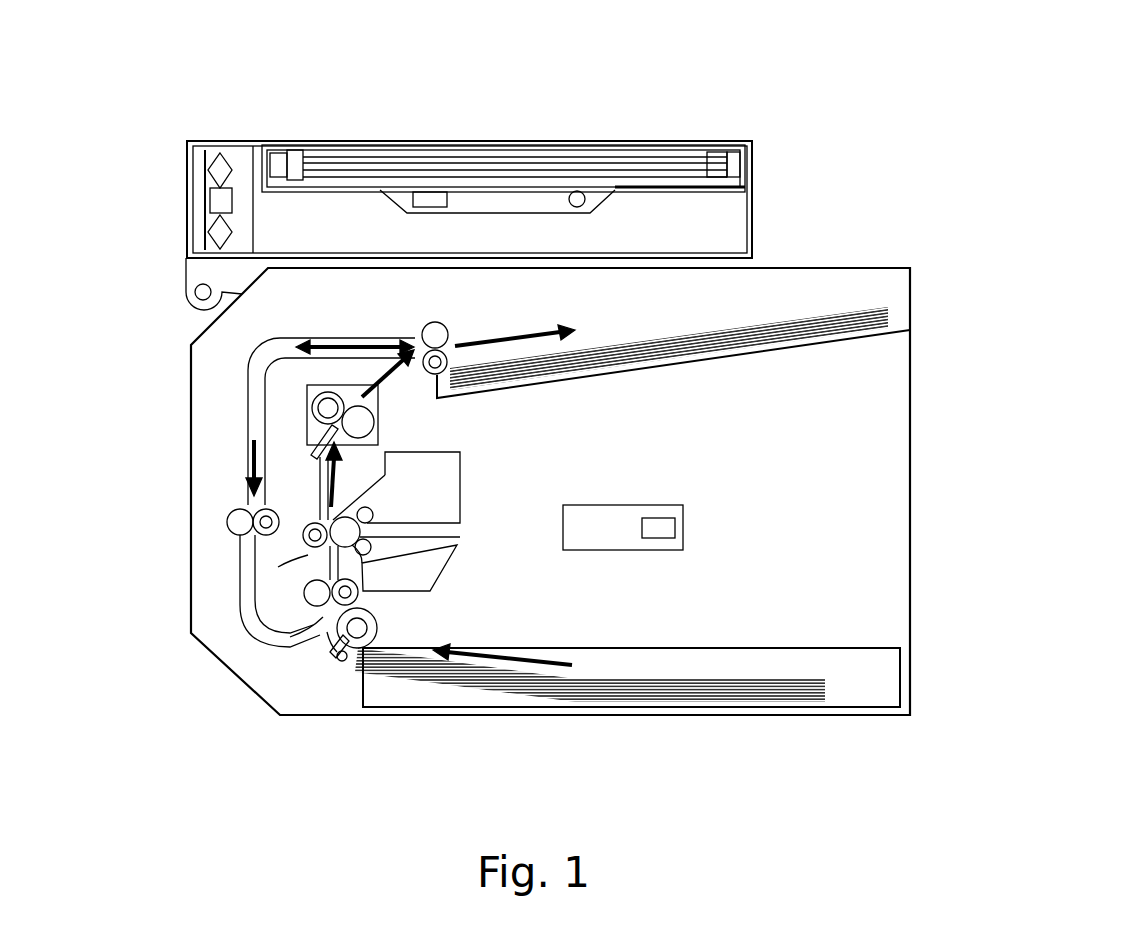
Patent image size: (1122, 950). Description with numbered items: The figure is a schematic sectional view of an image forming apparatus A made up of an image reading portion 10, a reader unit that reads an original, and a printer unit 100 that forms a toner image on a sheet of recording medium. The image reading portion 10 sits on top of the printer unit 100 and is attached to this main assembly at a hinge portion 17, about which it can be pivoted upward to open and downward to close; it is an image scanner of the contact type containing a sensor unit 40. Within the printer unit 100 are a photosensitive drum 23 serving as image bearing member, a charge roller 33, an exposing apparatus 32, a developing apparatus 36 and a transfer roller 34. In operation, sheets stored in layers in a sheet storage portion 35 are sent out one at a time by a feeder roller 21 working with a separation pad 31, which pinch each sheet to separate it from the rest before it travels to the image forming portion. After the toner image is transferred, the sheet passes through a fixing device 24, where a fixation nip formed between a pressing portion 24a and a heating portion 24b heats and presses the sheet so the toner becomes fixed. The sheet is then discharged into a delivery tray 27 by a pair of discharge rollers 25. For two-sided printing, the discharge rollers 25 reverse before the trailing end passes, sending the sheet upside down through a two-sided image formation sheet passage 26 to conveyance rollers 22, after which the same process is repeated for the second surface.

The image reading portion 10 is at (388, 124).
The sensor unit 40 is at (445, 150).
The image forming apparatus A is at (838, 230).
The hinge portion 17 is at (195, 292).
The printer unit 100 is at (925, 488).
The two-sided image formation sheet passage 26 is at (256, 370).
The fixing device 24 is at (380, 418).
The pressing portion 24a is at (320, 412).
The heating portion 24b is at (372, 432).
The pair of discharge rollers 25 is at (440, 326).
The delivery tray 27 is at (704, 349).
The charge roller 33 is at (372, 512).
The transfer roller 34 is at (312, 555).
The photosensitive drum 23 is at (450, 545).
The developing apparatus 36 is at (445, 570).
The conveyance rollers 22 is at (358, 598).
The feeder roller 21 is at (378, 630).
The separation pad 31 is at (347, 653).
The sheet storage portion 35 is at (627, 674).
The exposing apparatus 32 is at (683, 522).